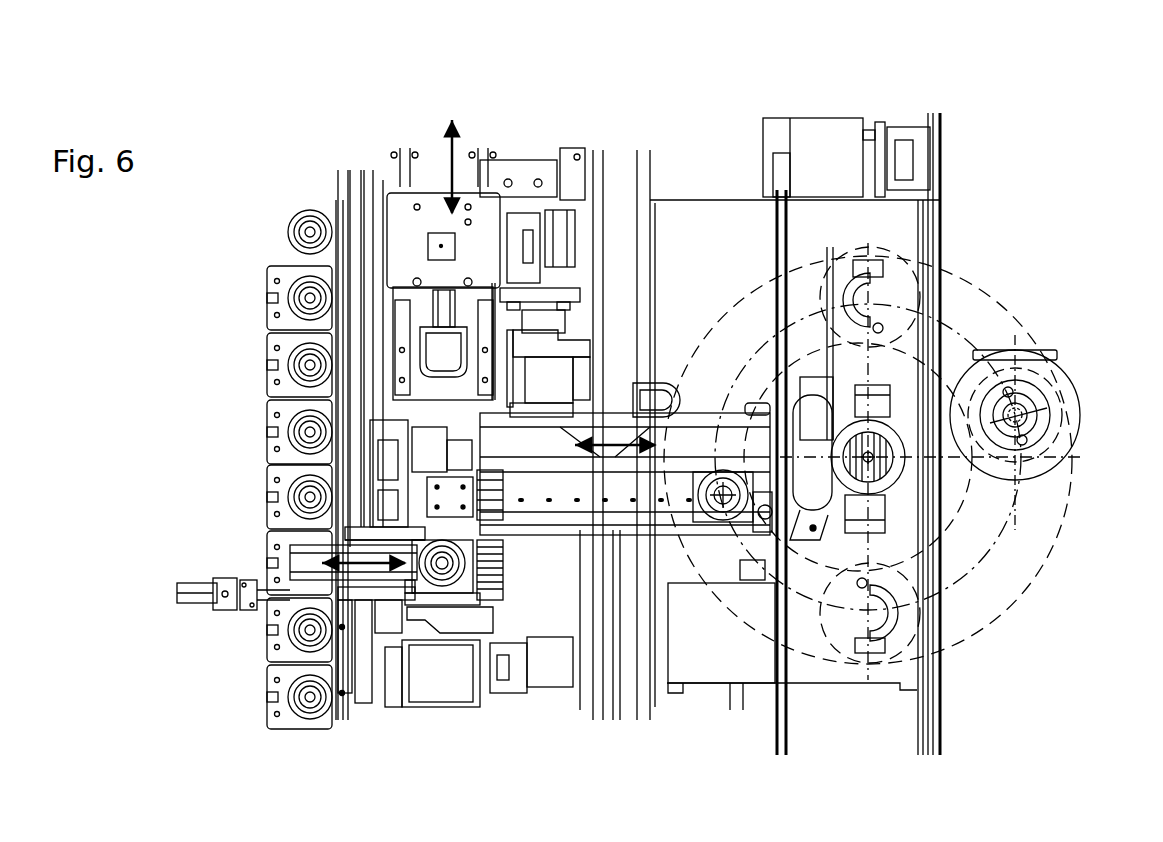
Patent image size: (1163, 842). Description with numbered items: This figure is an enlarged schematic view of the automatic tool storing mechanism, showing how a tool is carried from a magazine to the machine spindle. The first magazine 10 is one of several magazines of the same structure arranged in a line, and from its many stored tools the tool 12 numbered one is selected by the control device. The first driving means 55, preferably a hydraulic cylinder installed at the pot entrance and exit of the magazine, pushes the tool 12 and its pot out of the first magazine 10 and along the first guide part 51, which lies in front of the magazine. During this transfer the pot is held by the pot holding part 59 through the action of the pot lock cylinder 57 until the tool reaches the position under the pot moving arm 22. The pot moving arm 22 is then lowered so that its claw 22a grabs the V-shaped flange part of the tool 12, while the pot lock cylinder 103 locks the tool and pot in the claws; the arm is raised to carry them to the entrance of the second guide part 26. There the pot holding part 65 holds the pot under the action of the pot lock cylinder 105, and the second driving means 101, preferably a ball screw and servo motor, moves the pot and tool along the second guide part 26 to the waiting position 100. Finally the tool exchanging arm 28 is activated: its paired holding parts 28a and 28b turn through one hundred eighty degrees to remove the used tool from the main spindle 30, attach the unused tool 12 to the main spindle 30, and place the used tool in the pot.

The first magazine 10 is at (251, 464).
The tool 12 is at (388, 677).
The pot moving arm 22 is at (358, 219).
The claw 22a is at (411, 325).
The second guide part 26 is at (592, 399).
The tool exchanging arm 28 is at (872, 479).
The holding part 28a is at (883, 645).
The holding part 28b is at (850, 280).
The main spindle 30 is at (1075, 372).
The first guide part 51 is at (306, 578).
The first driving means 55 is at (183, 583).
The pot lock cylinder 57 is at (494, 593).
The pot holding part 59 is at (415, 589).
The pot holding part 65 is at (308, 347).
The waiting position 100 is at (740, 468).
The second driving means 101 is at (434, 478).
The pot lock cylinder 103 is at (432, 236).
The pot lock cylinder 105 is at (491, 477).